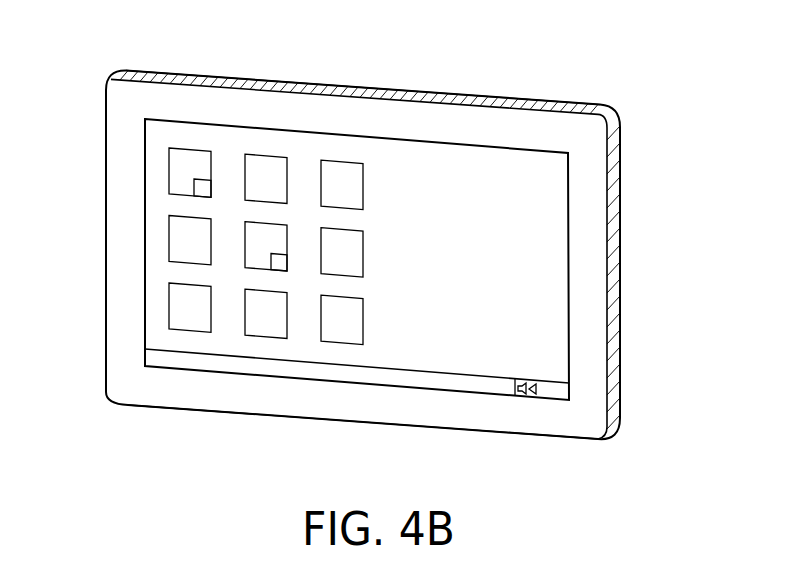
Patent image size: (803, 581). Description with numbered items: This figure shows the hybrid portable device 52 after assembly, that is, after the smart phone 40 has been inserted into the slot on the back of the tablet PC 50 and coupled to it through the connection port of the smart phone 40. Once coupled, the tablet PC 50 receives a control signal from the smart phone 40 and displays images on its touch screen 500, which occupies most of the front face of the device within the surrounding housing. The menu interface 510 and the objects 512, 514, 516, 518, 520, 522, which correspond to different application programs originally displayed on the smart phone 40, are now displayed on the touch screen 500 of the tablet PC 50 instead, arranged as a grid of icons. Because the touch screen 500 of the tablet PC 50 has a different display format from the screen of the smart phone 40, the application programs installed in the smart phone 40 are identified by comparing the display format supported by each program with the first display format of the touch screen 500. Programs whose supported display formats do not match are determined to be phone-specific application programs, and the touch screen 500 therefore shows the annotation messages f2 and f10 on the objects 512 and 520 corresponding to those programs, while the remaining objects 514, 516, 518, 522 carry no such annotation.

The touch screen 500 is at (568, 172).
The tablet PC 50 is at (560, 103).
The smart phone 40 is at (373, 93).
The hybrid portable device 52 is at (515, 435).
The menu interface 510 is at (493, 177).
The object 512 is at (177, 157).
The annotation message f2 is at (198, 182).
The object 514 is at (263, 163).
The object 516 is at (332, 165).
The object 518 is at (177, 228).
The object 520 is at (253, 242).
The annotation message f10 is at (270, 262).
The object 522 is at (353, 245).